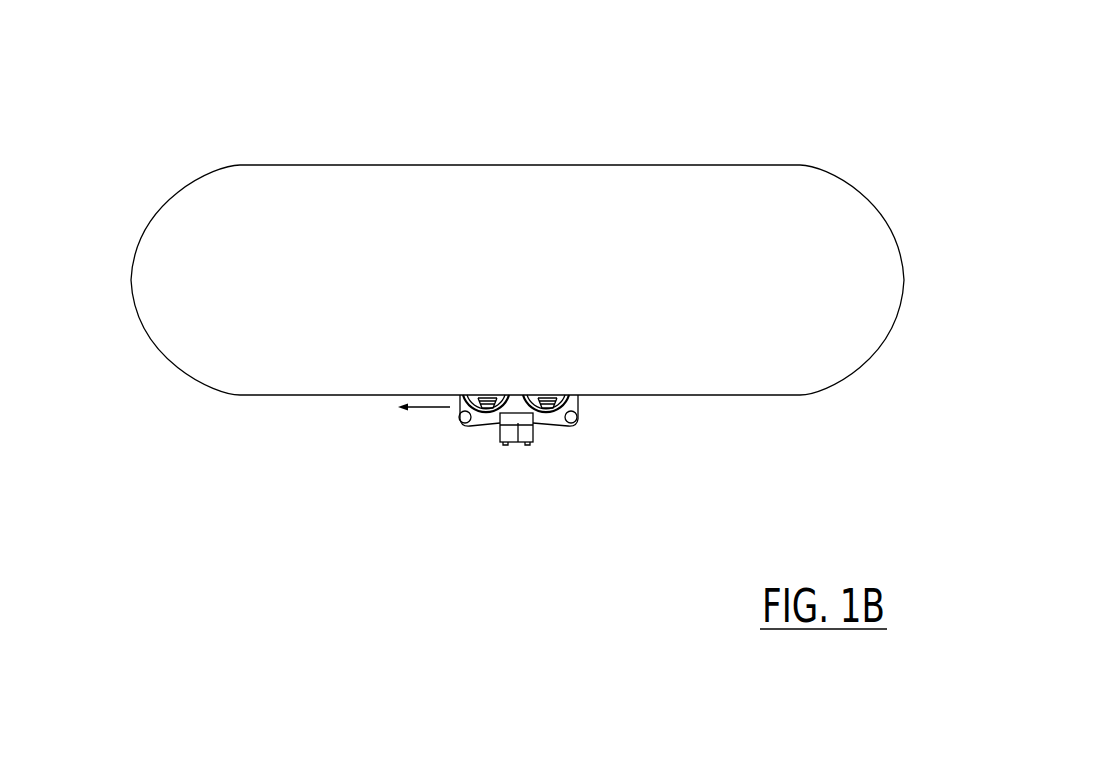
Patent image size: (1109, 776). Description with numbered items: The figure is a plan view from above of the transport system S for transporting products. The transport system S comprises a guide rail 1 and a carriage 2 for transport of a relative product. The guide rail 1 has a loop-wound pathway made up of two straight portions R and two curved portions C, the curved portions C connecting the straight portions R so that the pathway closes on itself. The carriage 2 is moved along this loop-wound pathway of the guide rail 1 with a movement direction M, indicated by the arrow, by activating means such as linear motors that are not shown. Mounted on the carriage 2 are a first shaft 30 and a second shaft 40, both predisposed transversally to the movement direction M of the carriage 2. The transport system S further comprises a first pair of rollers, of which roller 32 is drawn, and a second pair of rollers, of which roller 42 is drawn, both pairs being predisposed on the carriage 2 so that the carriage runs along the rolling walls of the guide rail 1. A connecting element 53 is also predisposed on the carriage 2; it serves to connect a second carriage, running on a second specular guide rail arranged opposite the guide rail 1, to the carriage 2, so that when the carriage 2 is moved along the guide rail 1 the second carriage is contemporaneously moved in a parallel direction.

The guide rail 1 is at (611, 402).
The carriage 2 is at (544, 422).
The first shaft 30 is at (555, 414).
The roller 32 is at (575, 422).
The second shaft 40 is at (492, 414).
The roller 42 is at (484, 409).
The connecting element 53 is at (518, 423).
The transport system S is at (366, 112).
The straight portions R is at (553, 165).
The curved portions C is at (135, 243).
The movement direction M is at (424, 428).